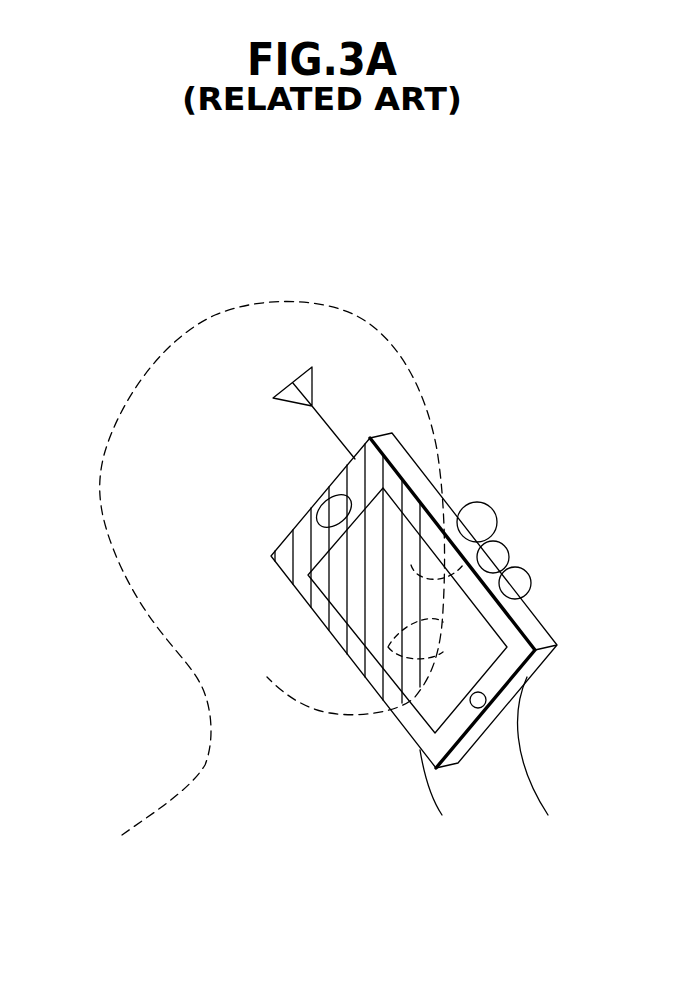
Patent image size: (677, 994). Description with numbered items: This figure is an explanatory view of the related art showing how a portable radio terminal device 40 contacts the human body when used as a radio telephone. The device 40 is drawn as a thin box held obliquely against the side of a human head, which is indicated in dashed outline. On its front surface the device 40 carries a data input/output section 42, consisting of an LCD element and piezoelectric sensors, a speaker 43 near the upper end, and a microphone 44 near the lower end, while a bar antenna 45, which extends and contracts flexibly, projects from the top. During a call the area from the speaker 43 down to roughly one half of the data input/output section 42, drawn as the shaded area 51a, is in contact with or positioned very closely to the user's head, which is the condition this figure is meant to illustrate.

The portable radio terminal device 40 is at (538, 660).
The data input/output section 42 is at (483, 645).
The speaker 43 is at (336, 510).
The microphone 44 is at (472, 704).
The bar antenna 45 is at (306, 408).
The shaded area 51a is at (392, 512).